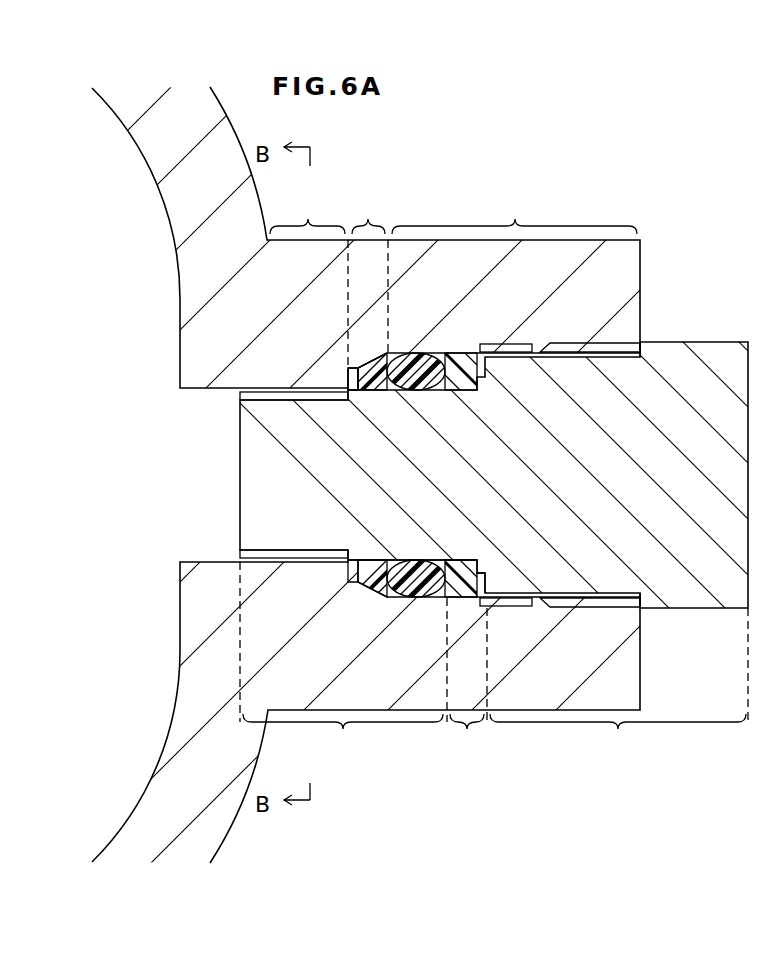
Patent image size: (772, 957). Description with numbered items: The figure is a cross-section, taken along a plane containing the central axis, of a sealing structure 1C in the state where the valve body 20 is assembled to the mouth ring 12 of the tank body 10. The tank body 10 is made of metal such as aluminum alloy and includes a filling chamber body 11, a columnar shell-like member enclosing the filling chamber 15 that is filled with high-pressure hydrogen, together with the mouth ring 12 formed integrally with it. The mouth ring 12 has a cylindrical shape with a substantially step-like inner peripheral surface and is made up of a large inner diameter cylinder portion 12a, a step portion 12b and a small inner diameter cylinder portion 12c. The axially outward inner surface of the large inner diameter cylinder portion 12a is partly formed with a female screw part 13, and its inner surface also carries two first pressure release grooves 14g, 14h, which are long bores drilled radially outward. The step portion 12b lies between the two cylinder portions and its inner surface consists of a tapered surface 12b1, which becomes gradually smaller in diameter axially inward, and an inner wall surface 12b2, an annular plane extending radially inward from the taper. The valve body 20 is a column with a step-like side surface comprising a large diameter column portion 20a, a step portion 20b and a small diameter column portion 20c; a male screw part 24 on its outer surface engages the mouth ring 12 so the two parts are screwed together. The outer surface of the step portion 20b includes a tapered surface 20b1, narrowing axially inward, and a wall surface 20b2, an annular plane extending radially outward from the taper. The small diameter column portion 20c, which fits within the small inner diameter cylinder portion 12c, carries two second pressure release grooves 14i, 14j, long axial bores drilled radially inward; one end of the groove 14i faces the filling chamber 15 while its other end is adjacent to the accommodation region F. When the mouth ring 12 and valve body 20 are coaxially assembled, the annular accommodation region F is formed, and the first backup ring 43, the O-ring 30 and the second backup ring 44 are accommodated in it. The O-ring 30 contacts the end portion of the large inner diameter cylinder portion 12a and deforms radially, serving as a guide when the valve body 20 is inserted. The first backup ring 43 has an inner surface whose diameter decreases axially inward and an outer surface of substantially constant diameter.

The sealing structure 1C is at (617, 175).
The tank body 10 is at (403, 813).
The filling chamber body 11 is at (230, 818).
The mouth ring 12 is at (642, 261).
The large inner diameter cylinder portion 12a is at (514, 213).
The step portion 12b is at (368, 272).
The tapered surface 12b1 is at (378, 360).
The inner wall surface 12b2 is at (348, 382).
The small inner diameter cylinder portion 12c is at (309, 279).
The female screw part 13 is at (540, 345).
The first pressure release groove 14g is at (512, 346).
The first pressure release groove 14h is at (511, 607).
The second pressure release groove 14i is at (257, 392).
The second pressure release groove 14j is at (293, 558).
The filling chamber 15 is at (142, 487).
The valve body 20 is at (708, 610).
The large diameter column portion 20a is at (619, 686).
The step portion 20b is at (467, 686).
The tapered surface 20b1 is at (459, 559).
The wall surface 20b2 is at (482, 577).
The small diameter column portion 20c is at (343, 663).
The male screw part 24 is at (650, 350).
The O-ring 30 is at (421, 392).
The first backup ring 43 is at (466, 380).
The second backup ring 44 is at (373, 392).
The accommodation region F is at (356, 368).